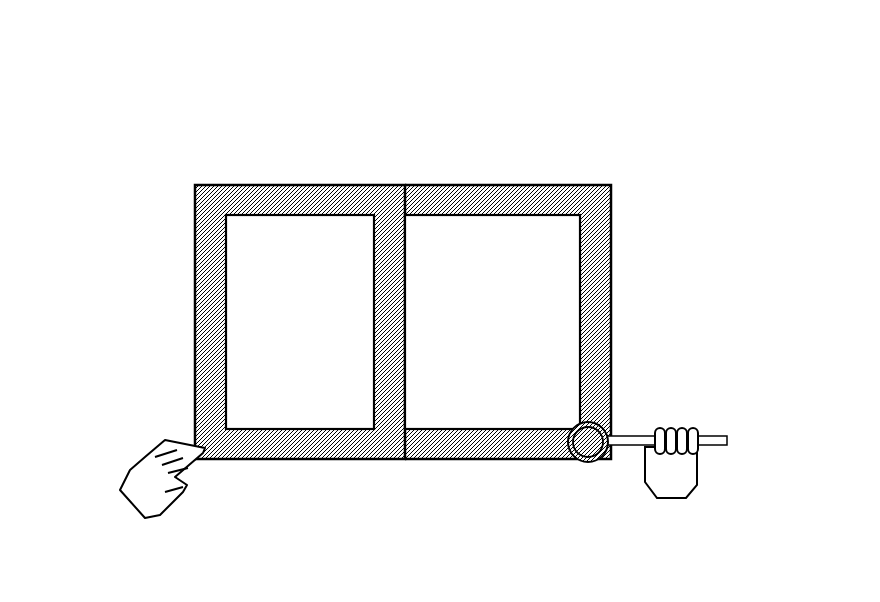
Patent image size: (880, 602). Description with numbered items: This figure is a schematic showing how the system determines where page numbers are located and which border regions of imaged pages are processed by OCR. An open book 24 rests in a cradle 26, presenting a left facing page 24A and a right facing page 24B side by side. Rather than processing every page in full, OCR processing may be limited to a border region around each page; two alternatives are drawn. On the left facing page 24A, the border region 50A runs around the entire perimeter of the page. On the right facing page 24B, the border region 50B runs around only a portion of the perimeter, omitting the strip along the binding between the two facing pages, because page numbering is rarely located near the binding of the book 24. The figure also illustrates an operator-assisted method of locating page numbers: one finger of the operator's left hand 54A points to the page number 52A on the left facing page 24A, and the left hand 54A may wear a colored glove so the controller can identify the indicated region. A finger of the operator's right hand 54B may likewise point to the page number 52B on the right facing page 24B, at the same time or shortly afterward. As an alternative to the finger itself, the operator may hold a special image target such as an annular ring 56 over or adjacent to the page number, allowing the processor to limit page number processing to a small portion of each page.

The book 24 is at (195, 125).
The left facing page 24A is at (195, 182).
The right facing page 24B is at (611, 182).
The cradle 26 is at (688, 224).
The border region 50A is at (227, 304).
The border region 50B is at (580, 318).
The page number 52A is at (219, 461).
The page number 52B is at (589, 463).
The operator's left hand 54A is at (134, 514).
The operator's right hand 54B is at (700, 455).
The annular ring 56 is at (609, 422).